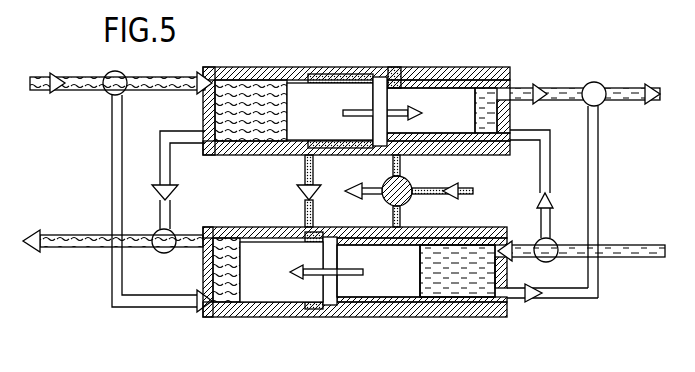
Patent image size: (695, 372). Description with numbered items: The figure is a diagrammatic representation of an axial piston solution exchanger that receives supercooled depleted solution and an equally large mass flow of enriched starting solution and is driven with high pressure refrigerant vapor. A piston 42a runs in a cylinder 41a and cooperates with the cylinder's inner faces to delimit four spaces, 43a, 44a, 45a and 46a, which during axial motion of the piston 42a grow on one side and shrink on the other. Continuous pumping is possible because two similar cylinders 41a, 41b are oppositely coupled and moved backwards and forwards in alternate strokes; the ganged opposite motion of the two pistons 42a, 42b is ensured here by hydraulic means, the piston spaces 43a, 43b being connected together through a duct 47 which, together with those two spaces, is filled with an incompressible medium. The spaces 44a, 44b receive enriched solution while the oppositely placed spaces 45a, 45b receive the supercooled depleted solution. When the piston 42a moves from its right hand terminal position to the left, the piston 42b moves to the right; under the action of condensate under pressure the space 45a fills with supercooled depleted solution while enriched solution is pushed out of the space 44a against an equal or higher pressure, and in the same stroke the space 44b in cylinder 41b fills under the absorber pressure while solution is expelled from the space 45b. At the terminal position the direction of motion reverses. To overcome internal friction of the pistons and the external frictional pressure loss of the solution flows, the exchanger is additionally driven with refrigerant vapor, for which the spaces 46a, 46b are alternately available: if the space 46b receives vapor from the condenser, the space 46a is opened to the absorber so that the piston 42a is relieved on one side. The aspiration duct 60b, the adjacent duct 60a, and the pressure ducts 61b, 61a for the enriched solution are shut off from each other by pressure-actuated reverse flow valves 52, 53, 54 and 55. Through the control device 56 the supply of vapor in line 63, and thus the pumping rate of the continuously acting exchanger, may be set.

The cylinder 41a is at (282, 303).
The cylinder 41b is at (278, 72).
The piston 42a is at (406, 277).
The piston 42b is at (440, 100).
The piston space 43a is at (322, 306).
The piston space 43b is at (321, 73).
The space 44a is at (233, 297).
The space 44b is at (234, 78).
The space 45a is at (488, 287).
The space 45b is at (487, 95).
The space 46a is at (392, 302).
The space 46b is at (394, 72).
The duct 47 is at (305, 210).
The pressure-actuated reverse flow valve 52 is at (600, 103).
The pressure-actuated reverse flow valve 53 is at (558, 237).
The pressure-actuated reverse flow valve 54 is at (105, 92).
The pressure-actuated reverse flow valve 55 is at (160, 233).
The control device 56 is at (387, 180).
The duct 60a is at (620, 258).
The aspiration duct 60b is at (618, 86).
The pressure duct for enriched solution 61a is at (45, 75).
The pressure duct for enriched solution 61b is at (65, 249).
The vapor supply line 63 is at (370, 198).